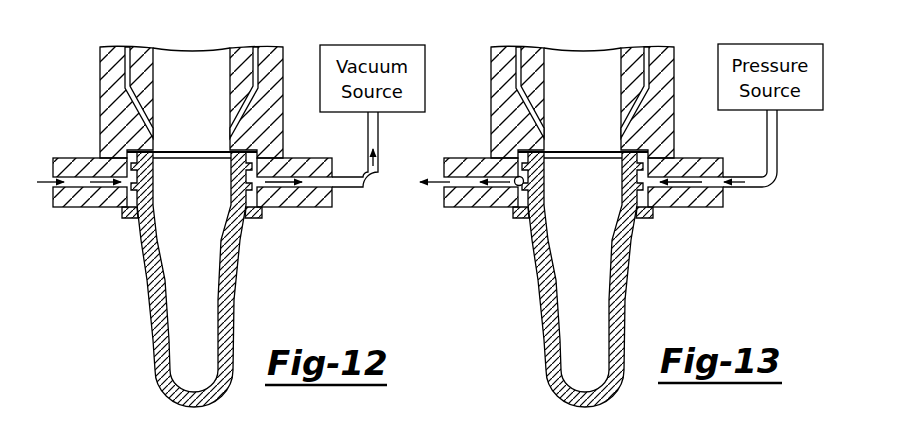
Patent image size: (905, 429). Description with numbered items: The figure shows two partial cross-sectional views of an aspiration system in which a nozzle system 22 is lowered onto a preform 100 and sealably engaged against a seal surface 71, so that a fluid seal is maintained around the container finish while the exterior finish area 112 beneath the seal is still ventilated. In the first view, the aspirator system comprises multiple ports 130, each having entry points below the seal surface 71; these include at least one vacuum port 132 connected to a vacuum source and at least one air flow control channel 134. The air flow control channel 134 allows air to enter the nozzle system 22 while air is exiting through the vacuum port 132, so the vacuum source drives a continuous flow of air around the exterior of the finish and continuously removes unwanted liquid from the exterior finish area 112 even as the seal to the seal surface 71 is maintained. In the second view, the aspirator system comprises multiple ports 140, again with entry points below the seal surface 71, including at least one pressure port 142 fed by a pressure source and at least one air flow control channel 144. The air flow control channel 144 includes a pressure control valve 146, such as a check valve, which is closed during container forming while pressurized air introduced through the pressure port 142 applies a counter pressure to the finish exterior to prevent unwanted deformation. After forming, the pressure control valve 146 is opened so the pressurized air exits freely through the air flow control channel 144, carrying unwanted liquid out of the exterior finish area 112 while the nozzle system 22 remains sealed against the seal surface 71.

In FIG. 12, the nozzle system 22 is at (88, 72).
In FIG. 13, the nozzle system 22 is at (476, 72).
In FIG. 12, the seal member 71 is at (236, 151).
In FIG. 13, the seal member 71 is at (627, 151).
In FIG. 12, the preform 100 is at (233, 318).
In FIG. 13, the preform 100 is at (625, 303).
In FIG. 12, the exterior finish area 112 is at (137, 212).
In FIG. 12, the multiple ports 130 is at (339, 168).
In FIG. 12, the vacuum port 132 is at (318, 183).
In FIG. 12, the air flow control channel 134 is at (53, 181).
In FIG. 13, the multiple ports 140 is at (739, 168).
In FIG. 13, the pressure port 142 is at (728, 183).
In FIG. 13, the air flow control channel 144 is at (432, 180).
In FIG. 13, the pressure control valve 146 is at (531, 181).